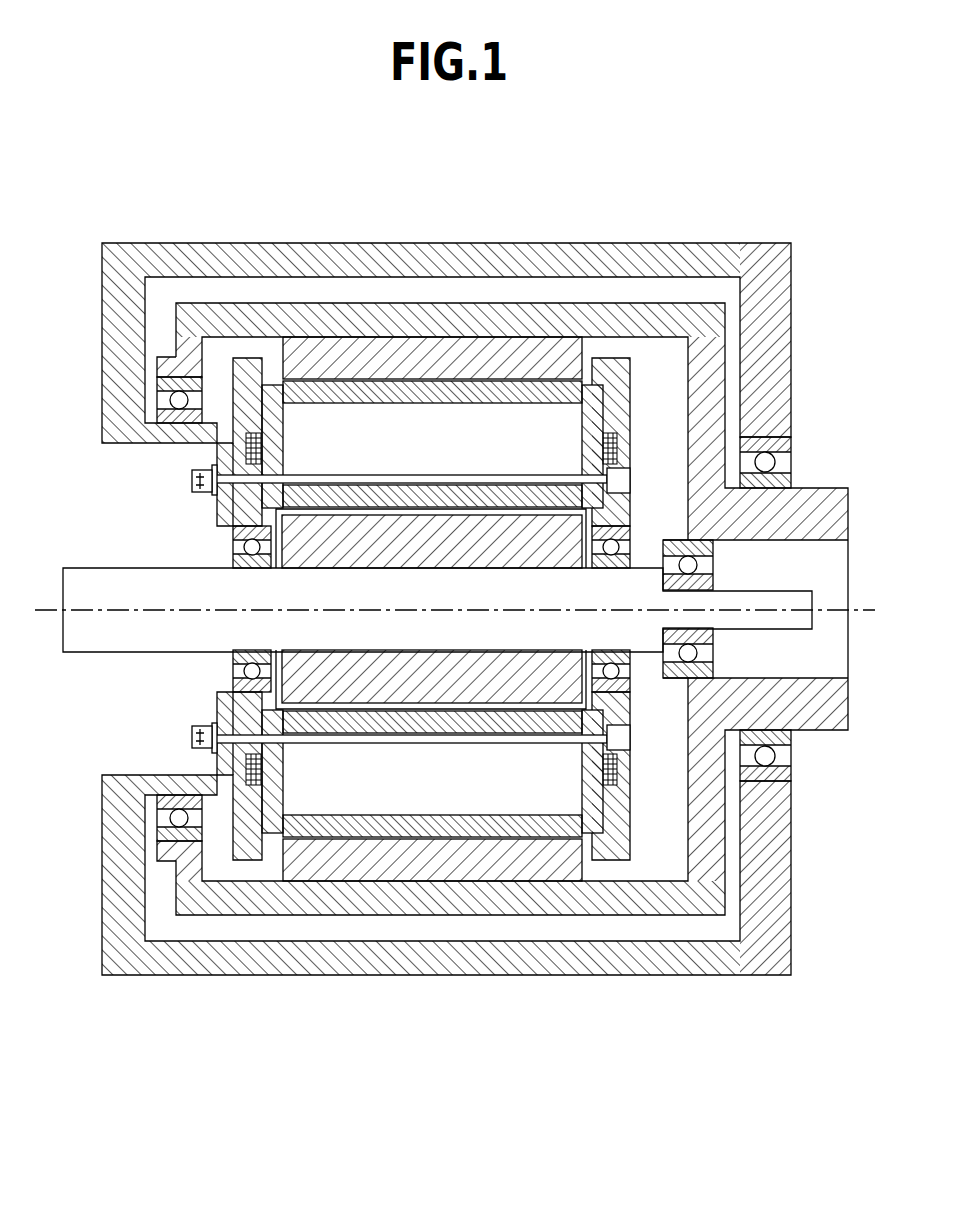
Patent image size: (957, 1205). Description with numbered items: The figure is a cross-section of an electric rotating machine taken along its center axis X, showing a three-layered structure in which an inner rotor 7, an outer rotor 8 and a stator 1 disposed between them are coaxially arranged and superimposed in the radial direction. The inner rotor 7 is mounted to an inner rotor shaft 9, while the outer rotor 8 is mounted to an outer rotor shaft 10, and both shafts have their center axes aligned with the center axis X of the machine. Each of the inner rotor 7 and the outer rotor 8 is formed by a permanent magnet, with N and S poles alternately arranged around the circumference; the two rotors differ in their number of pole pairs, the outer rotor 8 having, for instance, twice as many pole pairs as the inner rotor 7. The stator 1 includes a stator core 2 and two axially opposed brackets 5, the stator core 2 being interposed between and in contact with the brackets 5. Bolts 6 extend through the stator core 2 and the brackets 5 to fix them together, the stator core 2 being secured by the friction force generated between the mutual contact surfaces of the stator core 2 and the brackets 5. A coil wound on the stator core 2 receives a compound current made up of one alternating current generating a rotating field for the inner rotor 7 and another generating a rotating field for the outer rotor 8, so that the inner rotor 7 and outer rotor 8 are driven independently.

The stator 1 is at (273, 867).
The stator core 2 is at (367, 382).
The brackets 5 is at (250, 357).
The bolts 6 is at (191, 481).
The inner rotor 7 is at (347, 558).
The outer rotor 8 is at (490, 356).
The inner rotor shaft 9 is at (123, 635).
The outer rotor shaft 10 is at (817, 488).
The center axis X is at (137, 610).